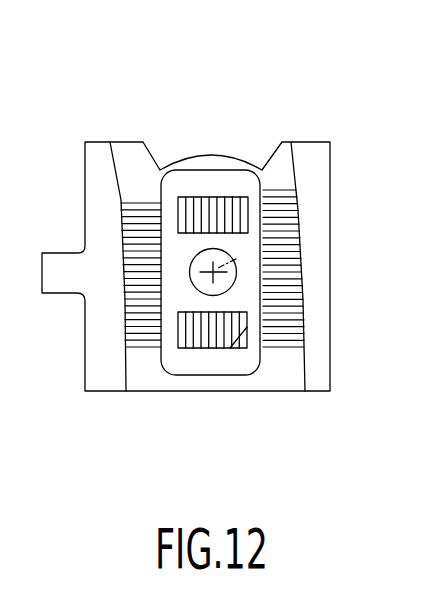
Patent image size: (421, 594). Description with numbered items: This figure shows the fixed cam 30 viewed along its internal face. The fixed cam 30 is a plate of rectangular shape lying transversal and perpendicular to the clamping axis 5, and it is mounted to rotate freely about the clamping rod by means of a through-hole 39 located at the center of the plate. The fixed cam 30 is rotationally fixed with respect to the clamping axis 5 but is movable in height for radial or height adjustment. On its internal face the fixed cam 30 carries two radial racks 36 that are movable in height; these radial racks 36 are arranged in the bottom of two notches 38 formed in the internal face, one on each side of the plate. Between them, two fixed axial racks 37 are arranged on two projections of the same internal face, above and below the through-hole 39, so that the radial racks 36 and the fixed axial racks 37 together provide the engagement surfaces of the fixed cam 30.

The fixed cam 30 is at (276, 116).
The notches 38 is at (136, 183).
The radial racks 36 is at (140, 245).
The fixed axial racks 37 is at (203, 221).
The through-hole 39 is at (228, 282).
The clamping axis 5 is at (236, 259).